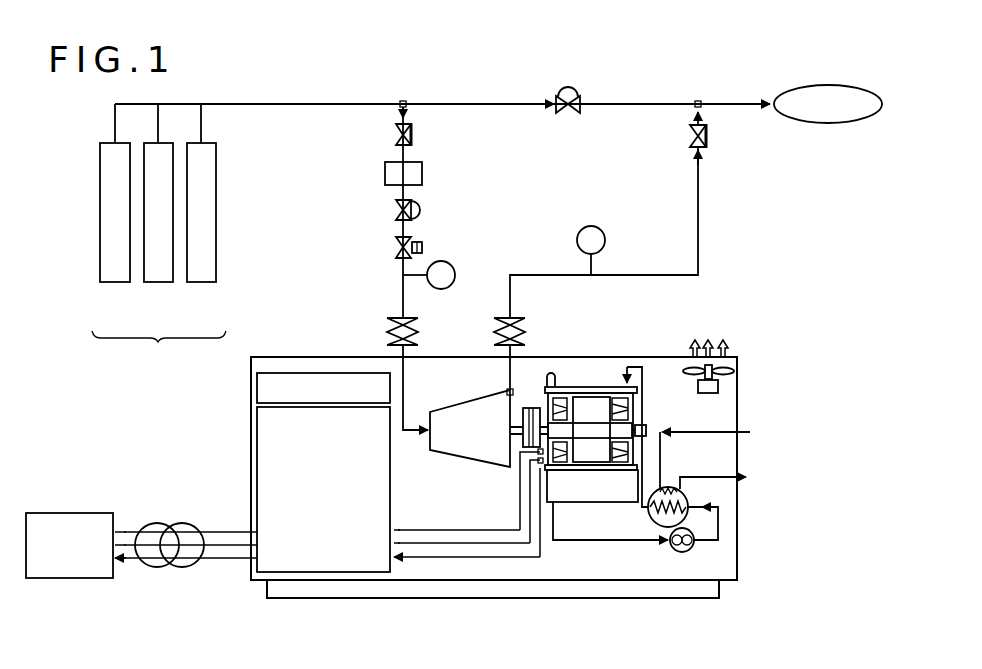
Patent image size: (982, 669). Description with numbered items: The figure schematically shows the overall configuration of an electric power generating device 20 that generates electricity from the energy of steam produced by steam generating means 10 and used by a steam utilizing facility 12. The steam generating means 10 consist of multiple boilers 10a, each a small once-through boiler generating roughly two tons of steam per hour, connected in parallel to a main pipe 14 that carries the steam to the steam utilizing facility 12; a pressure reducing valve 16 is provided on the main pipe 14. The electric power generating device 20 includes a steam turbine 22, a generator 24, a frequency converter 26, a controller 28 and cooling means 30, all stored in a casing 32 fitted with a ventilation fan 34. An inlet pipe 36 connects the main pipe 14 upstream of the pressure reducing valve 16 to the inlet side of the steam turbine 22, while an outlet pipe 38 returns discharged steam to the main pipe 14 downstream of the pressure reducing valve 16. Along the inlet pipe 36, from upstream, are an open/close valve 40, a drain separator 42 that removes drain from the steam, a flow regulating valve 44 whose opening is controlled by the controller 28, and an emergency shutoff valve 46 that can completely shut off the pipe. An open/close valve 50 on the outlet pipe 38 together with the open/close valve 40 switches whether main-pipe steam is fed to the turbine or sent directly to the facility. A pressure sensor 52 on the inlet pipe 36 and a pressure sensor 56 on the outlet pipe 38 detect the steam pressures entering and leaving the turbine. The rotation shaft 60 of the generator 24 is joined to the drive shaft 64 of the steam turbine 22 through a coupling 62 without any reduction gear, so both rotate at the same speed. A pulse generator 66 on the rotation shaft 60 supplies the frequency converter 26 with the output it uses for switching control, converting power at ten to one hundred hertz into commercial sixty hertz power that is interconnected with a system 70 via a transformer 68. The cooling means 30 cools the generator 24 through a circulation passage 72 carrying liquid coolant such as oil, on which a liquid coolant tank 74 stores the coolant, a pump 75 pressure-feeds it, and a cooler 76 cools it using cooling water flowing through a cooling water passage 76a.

The steam generating means 10 is at (159, 253).
The boiler 10a is at (115, 282).
The steam utilizing facility 12 is at (798, 92).
The main pipe 14 is at (350, 104).
The pressure reducing valve 16 is at (578, 90).
The electric power generating device 20 is at (760, 318).
The steam turbine 22 is at (466, 402).
The generator 24 is at (610, 389).
The frequency converter 26 is at (257, 430).
The controller 28 is at (257, 392).
The cooling means 30 is at (616, 544).
The casing 32 is at (668, 356).
The ventilation fan 34 is at (740, 371).
The inlet pipe 36 is at (403, 295).
The outlet pipe 38 is at (699, 219).
The open/close valve 40 is at (412, 134).
The drain separator 42 is at (385, 174).
The flow regulating valve 44 is at (422, 212).
The emergency shutoff valve 46 is at (423, 247).
The open/close valve 50 is at (689, 136).
The pressure sensor 52 is at (449, 287).
The pressure sensor 56 is at (591, 226).
The rotation shaft 60 is at (585, 428).
The coupling 62 is at (528, 406).
The drive shaft 64 is at (516, 448).
The pulse generator 66 is at (648, 424).
The transformer 68 is at (182, 522).
The system 70 is at (70, 512).
The circulation passage 72 is at (590, 542).
The liquid coolant tank 74 is at (594, 503).
The pump 75 is at (694, 548).
The cooler 76 is at (690, 518).
The cooling water passage 76a is at (705, 431).